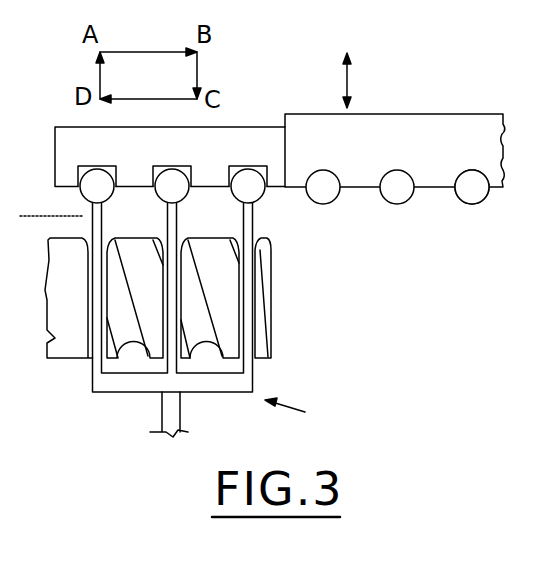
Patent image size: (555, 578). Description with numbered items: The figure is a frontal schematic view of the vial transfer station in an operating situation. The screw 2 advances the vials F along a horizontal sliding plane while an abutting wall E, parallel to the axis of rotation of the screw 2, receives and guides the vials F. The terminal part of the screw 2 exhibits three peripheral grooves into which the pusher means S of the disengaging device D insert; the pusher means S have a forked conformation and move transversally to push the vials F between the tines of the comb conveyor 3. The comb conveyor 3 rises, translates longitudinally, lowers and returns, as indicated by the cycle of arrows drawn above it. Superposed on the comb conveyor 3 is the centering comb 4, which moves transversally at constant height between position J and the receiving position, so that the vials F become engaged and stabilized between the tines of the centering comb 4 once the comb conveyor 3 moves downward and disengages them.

The screw 2 is at (67, 347).
The comb conveyor 3 is at (247, 133).
The centering comb 4 is at (462, 127).
The abutting wall E is at (47, 215).
The vials F is at (473, 192).
The pusher means S is at (247, 315).
The position J is at (350, 66).
The device for disengaging vials D is at (297, 413).